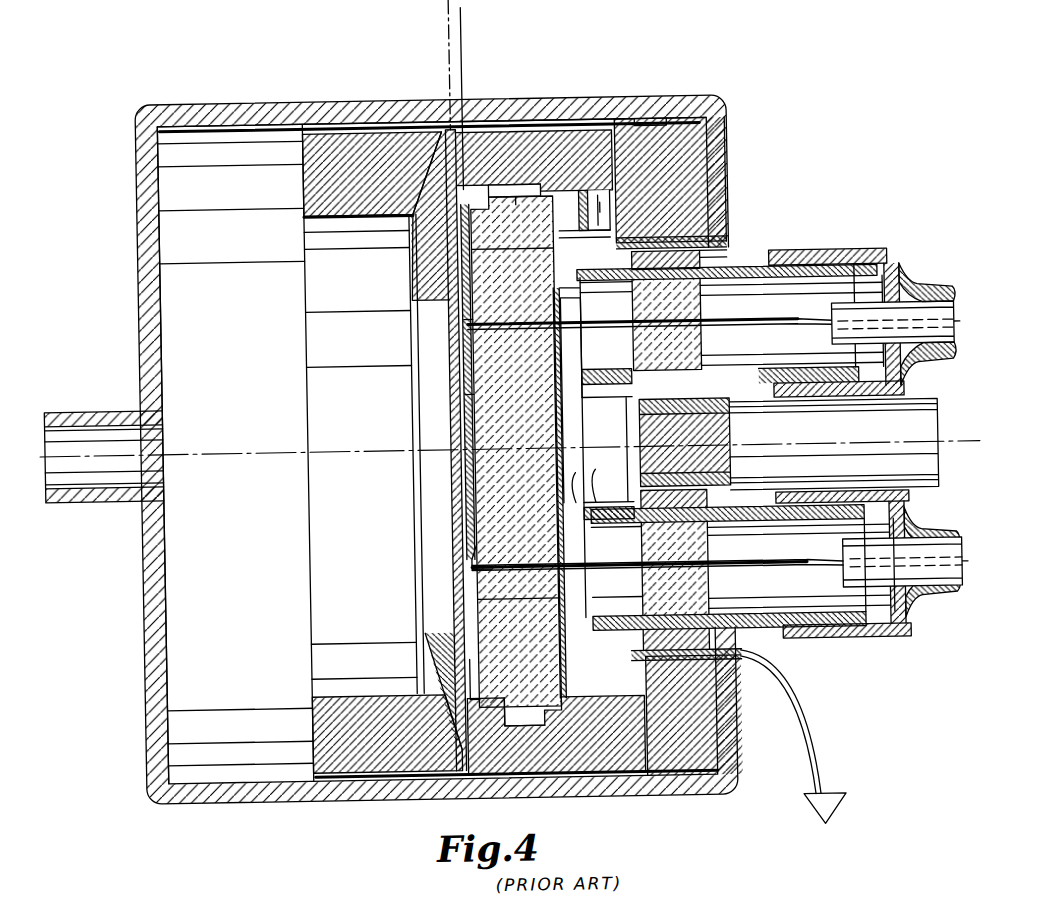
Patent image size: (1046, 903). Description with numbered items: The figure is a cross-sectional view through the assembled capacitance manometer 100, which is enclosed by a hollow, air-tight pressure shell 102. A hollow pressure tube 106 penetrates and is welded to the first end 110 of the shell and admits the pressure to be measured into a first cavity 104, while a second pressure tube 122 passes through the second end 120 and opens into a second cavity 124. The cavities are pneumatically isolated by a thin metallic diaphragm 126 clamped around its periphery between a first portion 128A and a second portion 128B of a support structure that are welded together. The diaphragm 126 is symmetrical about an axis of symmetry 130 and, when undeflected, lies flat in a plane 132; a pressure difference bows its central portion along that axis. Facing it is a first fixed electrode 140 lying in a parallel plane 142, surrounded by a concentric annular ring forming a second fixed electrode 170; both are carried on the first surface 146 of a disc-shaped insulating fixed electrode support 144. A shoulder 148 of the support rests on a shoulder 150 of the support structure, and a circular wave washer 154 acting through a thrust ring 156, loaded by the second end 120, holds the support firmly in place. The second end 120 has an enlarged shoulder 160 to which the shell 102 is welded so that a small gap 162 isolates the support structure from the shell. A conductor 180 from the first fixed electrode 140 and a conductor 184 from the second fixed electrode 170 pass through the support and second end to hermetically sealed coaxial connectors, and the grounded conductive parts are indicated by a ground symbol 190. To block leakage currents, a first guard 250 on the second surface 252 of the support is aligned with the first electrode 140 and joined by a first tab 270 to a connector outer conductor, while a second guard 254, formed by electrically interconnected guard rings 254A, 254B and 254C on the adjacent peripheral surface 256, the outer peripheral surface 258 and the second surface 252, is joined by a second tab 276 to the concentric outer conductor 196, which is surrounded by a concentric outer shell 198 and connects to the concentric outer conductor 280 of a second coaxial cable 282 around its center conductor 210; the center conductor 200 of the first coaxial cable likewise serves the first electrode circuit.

The capacitance manometer 100 is at (190, 806).
The hollow pressure shell 102 is at (230, 98).
The first cavity 104 is at (160, 266).
The hollow pressure tube 106 is at (86, 508).
The first end 110 is at (150, 362).
The second end 120 is at (740, 162).
The second pressure tube 122 is at (904, 482).
The second cavity 124 is at (462, 396).
The diaphragm 126 is at (468, 322).
The first portion 128A is at (362, 140).
The second portion 128B is at (608, 130).
The axis of symmetry 130 is at (236, 460).
The plane 132 is at (452, 14).
The first fixed electrode 140 is at (466, 488).
The plane 142 is at (470, 45).
The fixed electrode support 144 is at (490, 536).
The first surface 146 is at (470, 664).
The fixed electrode support shoulder 148 is at (460, 712).
The support structure shoulder 150 is at (530, 740).
The circular wave washer 154 is at (612, 205).
The thrust ring 156 is at (640, 740).
The shoulder 160 is at (666, 125).
The gap 162 is at (548, 126).
The second fixed electrode 170 is at (466, 276).
The conductor 180 is at (736, 583).
The conductor 184 is at (735, 340).
The ground symbol 190 is at (830, 795).
The concentric outer conductor 196 is at (738, 275).
The concentric outer shell 198 is at (738, 250).
The electrical conductor 200 is at (812, 570).
The electrical conductor 210 is at (806, 328).
The first guard 250 is at (599, 450).
The second surface 252 is at (580, 418).
The second guard 254 is at (519, 614).
The first guard ring 254A is at (452, 200).
The second guard ring 254B is at (556, 169).
The third guard ring 254C is at (516, 451).
The adjacent peripheral surface 256 is at (507, 172).
The outer peripheral surface 258 is at (604, 193).
The first tab 270 is at (584, 476).
The second tab 276 is at (584, 243).
The concentric outer conductor 280 is at (906, 270).
The second coaxial cable 282 is at (935, 375).